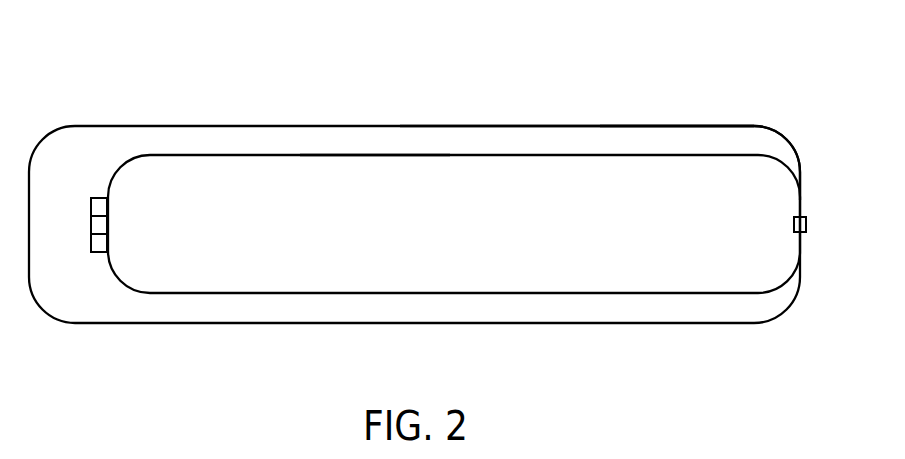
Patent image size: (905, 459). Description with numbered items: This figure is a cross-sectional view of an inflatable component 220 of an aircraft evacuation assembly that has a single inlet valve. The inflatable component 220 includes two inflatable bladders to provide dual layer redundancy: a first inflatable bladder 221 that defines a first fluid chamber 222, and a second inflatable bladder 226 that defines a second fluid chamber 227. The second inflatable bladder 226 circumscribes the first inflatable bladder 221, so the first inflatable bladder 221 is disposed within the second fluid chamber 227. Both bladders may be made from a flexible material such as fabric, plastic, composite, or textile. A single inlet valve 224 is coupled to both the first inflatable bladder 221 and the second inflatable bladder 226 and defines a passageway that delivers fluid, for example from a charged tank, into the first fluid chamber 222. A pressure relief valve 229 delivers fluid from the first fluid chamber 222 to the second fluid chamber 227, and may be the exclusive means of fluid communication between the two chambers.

The inflatable component 220 is at (134, 64).
The first inflatable bladder 221 is at (362, 155).
The first fluid chamber 222 is at (398, 175).
The inlet valve 224 is at (819, 241).
The second inflatable bladder 226 is at (575, 125).
The second fluid chamber 227 is at (644, 141).
The pressure relief valve 229 is at (75, 247).